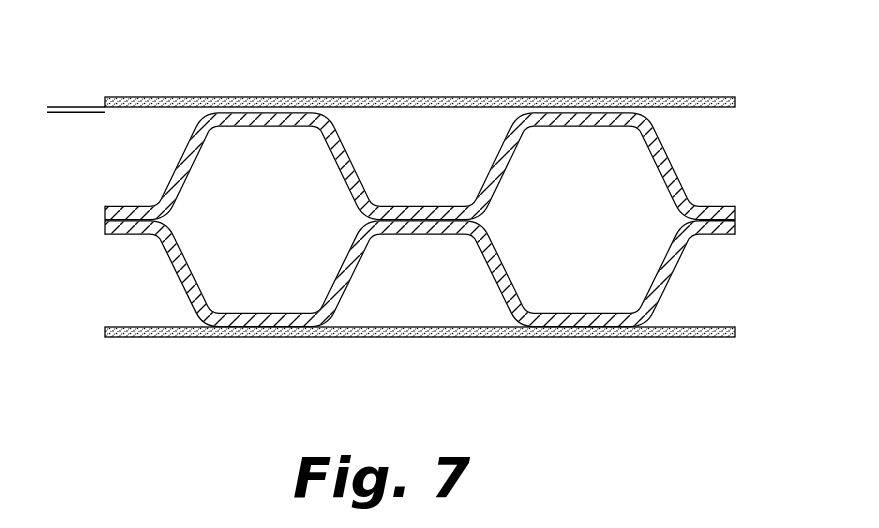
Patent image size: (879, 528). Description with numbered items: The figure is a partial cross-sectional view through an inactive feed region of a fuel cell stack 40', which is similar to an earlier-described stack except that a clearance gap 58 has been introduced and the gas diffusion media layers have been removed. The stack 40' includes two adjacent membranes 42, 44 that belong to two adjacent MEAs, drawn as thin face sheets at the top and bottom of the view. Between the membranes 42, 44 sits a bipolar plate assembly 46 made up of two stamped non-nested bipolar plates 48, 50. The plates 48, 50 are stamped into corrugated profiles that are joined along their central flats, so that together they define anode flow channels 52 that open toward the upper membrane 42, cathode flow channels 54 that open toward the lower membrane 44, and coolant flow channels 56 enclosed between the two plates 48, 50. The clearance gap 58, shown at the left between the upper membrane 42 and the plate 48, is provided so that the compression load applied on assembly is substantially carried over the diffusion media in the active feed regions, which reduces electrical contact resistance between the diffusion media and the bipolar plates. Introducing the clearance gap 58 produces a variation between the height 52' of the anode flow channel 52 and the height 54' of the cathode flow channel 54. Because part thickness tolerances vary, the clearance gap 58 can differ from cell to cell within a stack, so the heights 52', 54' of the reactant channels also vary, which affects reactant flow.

The fuel cell stack 40' is at (420, 176).
The membrane 42 is at (492, 97).
The membrane 44 is at (468, 338).
The bipolar plate assembly 46 is at (740, 217).
The stamped non-nested bipolar plate 48 is at (177, 167).
The stamped non-nested bipolar plate 50 is at (668, 278).
The anode flow channel 52 is at (422, 117).
The height of anode flow channel 52' is at (453, 159).
The cathode flow channel 54 is at (411, 325).
The height of cathode flow channel 54' is at (453, 281).
The coolant flow channel 56 is at (265, 290).
The clearance gap 58 is at (56, 75).